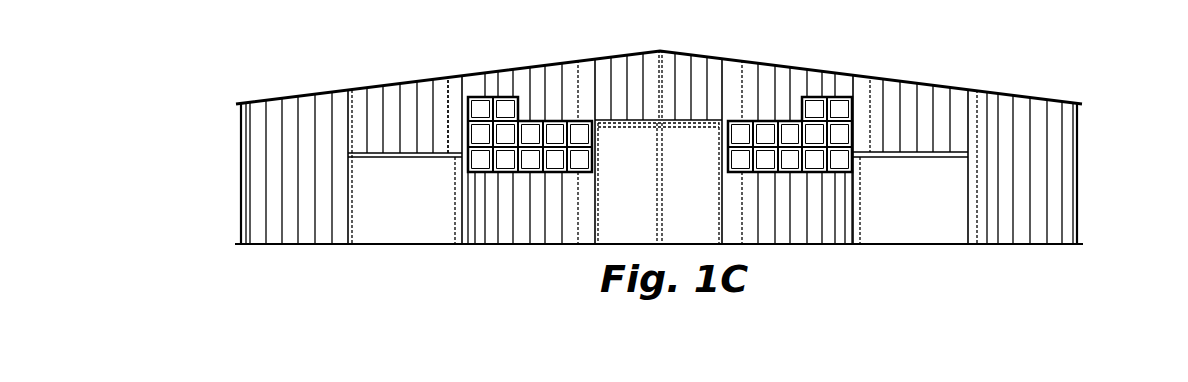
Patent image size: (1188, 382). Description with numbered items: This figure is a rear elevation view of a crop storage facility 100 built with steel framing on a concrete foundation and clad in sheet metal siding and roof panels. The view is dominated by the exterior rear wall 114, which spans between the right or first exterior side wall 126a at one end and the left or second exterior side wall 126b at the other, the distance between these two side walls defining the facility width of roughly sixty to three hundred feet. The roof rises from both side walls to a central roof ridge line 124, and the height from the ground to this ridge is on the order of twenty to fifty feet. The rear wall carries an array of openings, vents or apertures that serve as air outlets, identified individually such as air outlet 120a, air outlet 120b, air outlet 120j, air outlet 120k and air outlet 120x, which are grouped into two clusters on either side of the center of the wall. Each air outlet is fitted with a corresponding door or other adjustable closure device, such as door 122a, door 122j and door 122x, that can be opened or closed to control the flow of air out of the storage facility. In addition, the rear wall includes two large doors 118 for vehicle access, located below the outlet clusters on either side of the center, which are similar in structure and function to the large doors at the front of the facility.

The storage facility 100 is at (653, 147).
The exterior rear wall 114 is at (1045, 210).
The large doors 118 is at (412, 228).
The air outlet 120a is at (468, 175).
The air outlet 120b is at (505, 160).
The air outlet 120j is at (815, 158).
The air outlet 120k is at (480, 128).
The air outlet 120x is at (852, 117).
The door 122a is at (466, 158).
The door 122j is at (852, 157).
The door 122x is at (835, 108).
The roof ridge line 124 is at (660, 52).
The first exterior side wall 126a is at (241, 168).
The second exterior side wall 126b is at (1078, 173).